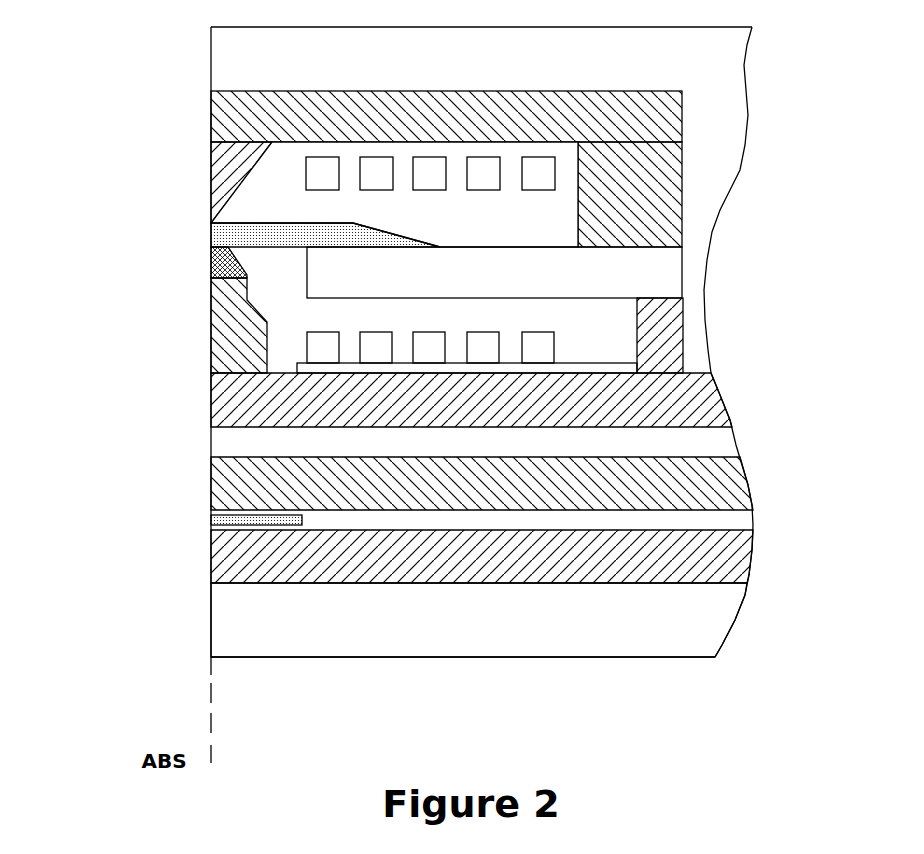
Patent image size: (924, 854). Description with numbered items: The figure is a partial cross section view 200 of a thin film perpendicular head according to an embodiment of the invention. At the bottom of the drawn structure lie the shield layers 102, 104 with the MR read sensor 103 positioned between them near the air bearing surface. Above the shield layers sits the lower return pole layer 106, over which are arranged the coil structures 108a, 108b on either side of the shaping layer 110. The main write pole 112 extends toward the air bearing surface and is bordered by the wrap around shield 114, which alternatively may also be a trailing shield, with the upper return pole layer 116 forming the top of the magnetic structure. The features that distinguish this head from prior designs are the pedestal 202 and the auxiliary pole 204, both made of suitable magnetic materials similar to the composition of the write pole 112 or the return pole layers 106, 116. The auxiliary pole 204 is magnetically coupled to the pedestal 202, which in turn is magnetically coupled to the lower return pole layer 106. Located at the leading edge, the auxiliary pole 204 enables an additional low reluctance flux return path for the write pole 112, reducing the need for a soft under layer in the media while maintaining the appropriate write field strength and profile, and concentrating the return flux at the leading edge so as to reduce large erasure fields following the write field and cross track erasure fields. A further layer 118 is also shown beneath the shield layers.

The partial cross section view 200 is at (753, 225).
The upper return pole layer 116 is at (460, 126).
The wrap around shield 114 is at (216, 177).
The main write pole 112 is at (211, 235).
The auxiliary pole 204 is at (211, 265).
The pedestal 202 is at (211, 332).
The shaping layer 110 is at (545, 284).
The coil structure 108b is at (430, 190).
The coil structure 108a is at (377, 331).
The lower return pole layer 106 is at (385, 414).
The shield layer 104 is at (400, 504).
The MR read sensor 103 is at (211, 522).
The shield layer 102 is at (400, 571).
The substrate 118 is at (446, 637).